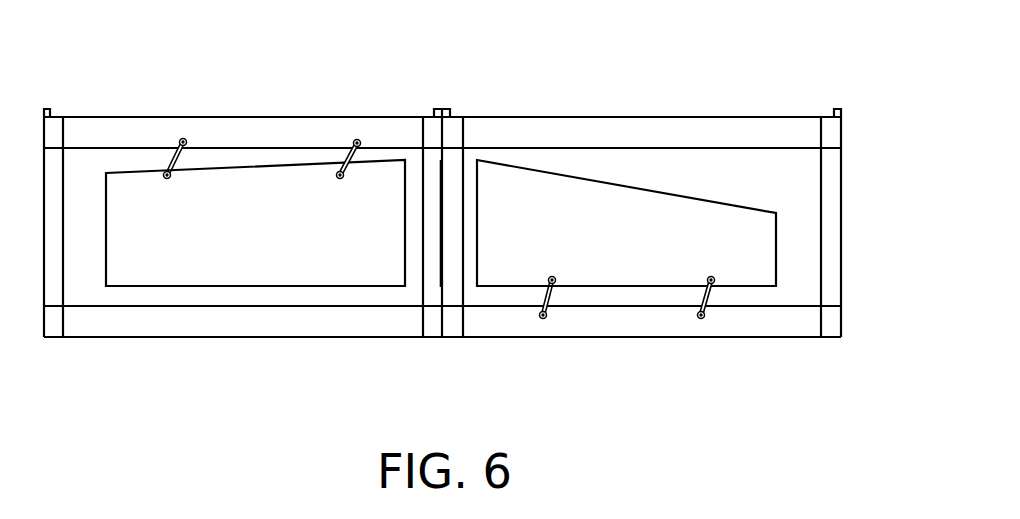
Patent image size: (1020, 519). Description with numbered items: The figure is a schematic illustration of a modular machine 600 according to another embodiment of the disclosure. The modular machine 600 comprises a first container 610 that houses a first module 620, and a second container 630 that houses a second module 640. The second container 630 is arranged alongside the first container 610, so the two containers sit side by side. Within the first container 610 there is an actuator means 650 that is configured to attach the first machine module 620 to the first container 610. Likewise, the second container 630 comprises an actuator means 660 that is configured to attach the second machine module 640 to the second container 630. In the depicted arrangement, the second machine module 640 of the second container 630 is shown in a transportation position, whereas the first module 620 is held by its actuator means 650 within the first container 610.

The modular machine 600 is at (485, 208).
The first container 610 is at (228, 117).
The first module 620 is at (263, 287).
The second container 630 is at (638, 117).
The second module 640 is at (615, 287).
The actuator means 650 is at (357, 140).
The actuator means 660 is at (701, 318).